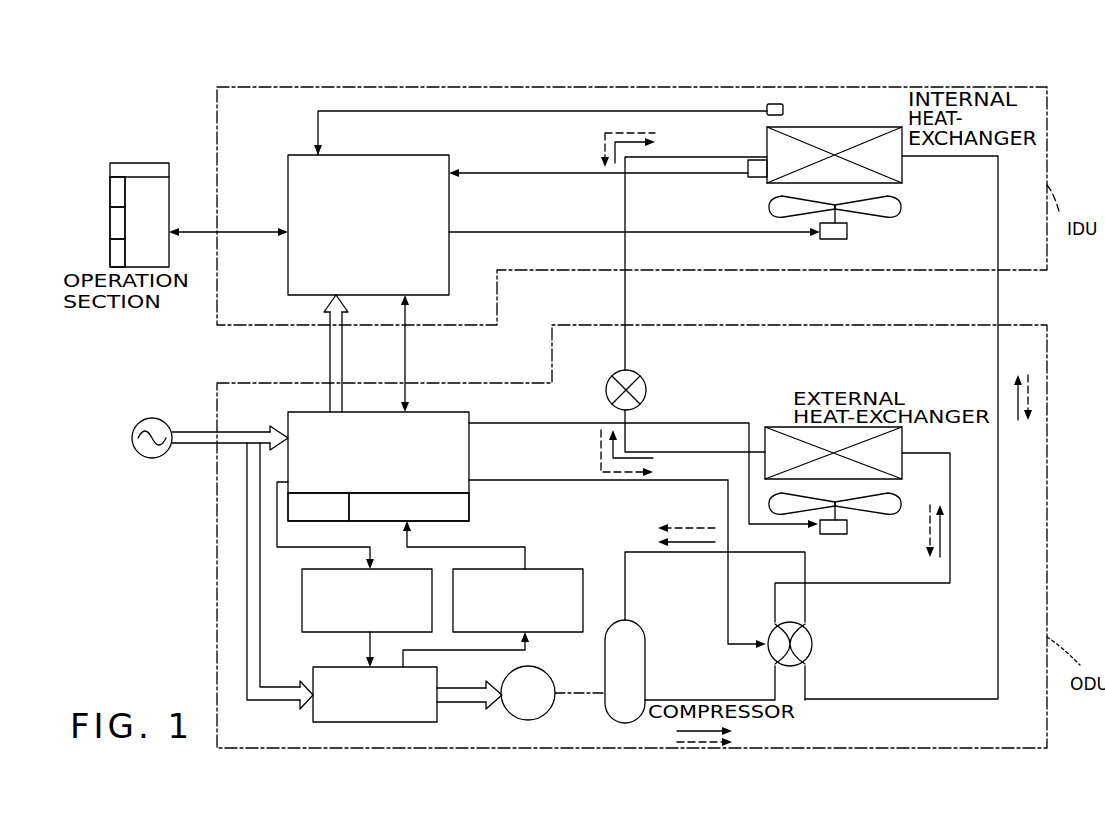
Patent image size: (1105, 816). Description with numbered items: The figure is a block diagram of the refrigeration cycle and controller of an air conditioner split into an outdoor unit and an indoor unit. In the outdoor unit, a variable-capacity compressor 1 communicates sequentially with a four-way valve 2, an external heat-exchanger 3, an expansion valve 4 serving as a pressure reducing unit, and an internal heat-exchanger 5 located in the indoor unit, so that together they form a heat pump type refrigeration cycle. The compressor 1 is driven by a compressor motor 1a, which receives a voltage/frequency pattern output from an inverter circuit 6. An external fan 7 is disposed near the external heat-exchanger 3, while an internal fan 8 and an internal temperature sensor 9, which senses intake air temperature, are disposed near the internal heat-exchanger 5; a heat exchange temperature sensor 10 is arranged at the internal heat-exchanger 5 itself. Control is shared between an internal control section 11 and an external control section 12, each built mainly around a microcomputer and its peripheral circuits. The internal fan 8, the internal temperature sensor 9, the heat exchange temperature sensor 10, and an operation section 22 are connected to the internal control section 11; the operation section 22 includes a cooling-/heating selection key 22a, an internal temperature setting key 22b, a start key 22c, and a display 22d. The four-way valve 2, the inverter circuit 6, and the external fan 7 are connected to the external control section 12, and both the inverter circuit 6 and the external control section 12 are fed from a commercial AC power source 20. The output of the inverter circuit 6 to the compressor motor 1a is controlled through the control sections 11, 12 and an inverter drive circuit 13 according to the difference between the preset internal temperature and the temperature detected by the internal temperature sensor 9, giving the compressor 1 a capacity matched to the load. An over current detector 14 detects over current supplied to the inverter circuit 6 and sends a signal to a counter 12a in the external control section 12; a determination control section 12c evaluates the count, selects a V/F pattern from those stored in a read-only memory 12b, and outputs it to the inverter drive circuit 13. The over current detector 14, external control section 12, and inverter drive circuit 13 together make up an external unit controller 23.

The variable-capacity compressor 1 is at (645, 682).
The compressor motor 1a is at (548, 715).
The four-way valve 2 is at (812, 633).
The external heat-exchanger 3 is at (781, 425).
The expansion valve 4 is at (644, 375).
The internal heat-exchanger 5 is at (870, 128).
The inverter circuit 6 is at (437, 713).
The external fan 7 is at (857, 520).
The internal fan 8 is at (855, 222).
The internal temperature sensor 9 is at (767, 113).
The heat exchange temperature sensor 10 is at (754, 178).
The internal control section 11 is at (449, 265).
The external control section 12 is at (469, 437).
The counter 12a is at (469, 506).
The read-only memory (ROM) 12b is at (330, 521).
The determination control section 12c is at (469, 465).
The inverter drive circuit 13 is at (302, 620).
The over current detector 14 is at (563, 565).
The commercial AC power source 20 is at (135, 455).
The operation section 22 is at (169, 262).
The cooling-/heating selection key 22a is at (110, 193).
The internal temperature setting key 22b is at (110, 225).
The start key 22c is at (110, 259).
The display 22d is at (139, 163).
The external unit controller 23 is at (290, 635).